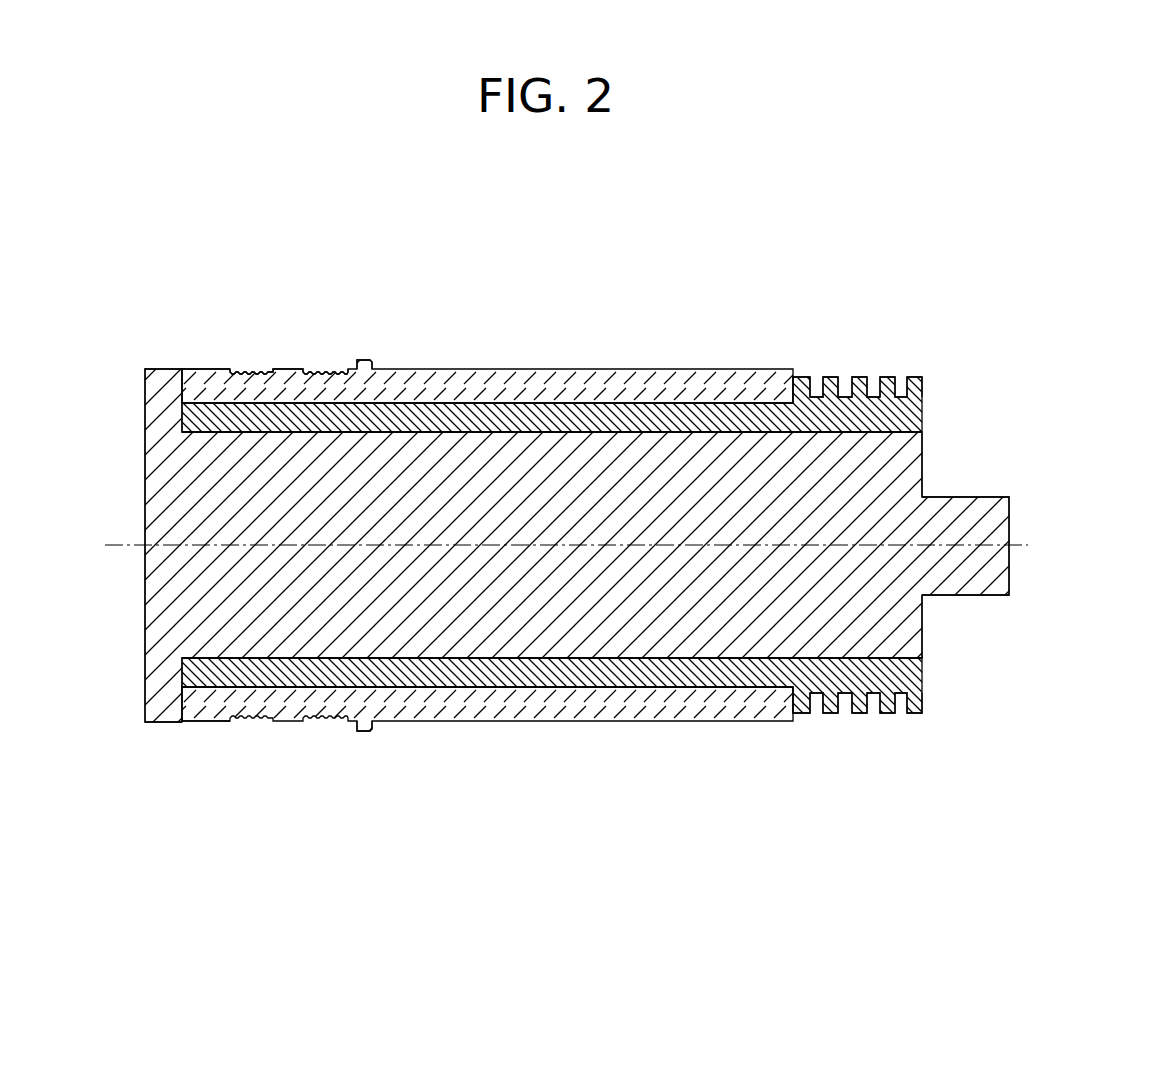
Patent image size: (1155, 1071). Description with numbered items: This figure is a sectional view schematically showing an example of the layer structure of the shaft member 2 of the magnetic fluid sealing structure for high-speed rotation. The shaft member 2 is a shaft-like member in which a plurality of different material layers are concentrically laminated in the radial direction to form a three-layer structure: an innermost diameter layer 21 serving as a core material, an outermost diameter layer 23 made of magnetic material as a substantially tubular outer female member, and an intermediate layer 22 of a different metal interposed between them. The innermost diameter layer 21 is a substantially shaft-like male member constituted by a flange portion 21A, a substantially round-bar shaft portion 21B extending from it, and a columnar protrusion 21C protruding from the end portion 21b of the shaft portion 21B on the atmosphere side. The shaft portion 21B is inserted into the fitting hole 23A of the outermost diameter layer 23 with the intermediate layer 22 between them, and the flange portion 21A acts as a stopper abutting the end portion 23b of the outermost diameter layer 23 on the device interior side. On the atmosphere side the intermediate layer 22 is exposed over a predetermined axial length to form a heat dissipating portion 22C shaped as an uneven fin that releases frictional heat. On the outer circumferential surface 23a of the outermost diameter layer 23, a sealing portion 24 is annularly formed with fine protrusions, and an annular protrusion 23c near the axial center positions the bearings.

The shaft member 2 is at (160, 168).
The innermost diameter layer 21 is at (604, 508).
The flange portion 21A is at (158, 369).
The shaft portion 21B is at (553, 455).
The end portion 21b is at (923, 446).
The columnar protrusion 21C is at (1002, 578).
The intermediate layer 22 is at (556, 498).
The heat dissipating portion 22C is at (872, 366).
The outermost diameter layer 23 is at (424, 486).
The fitting hole 23A is at (238, 415).
The outer circumferential surface 23a is at (204, 369).
The end portion 23b is at (182, 710).
The annular protrusion 23c is at (366, 360).
The sealing portion 24 is at (314, 358).